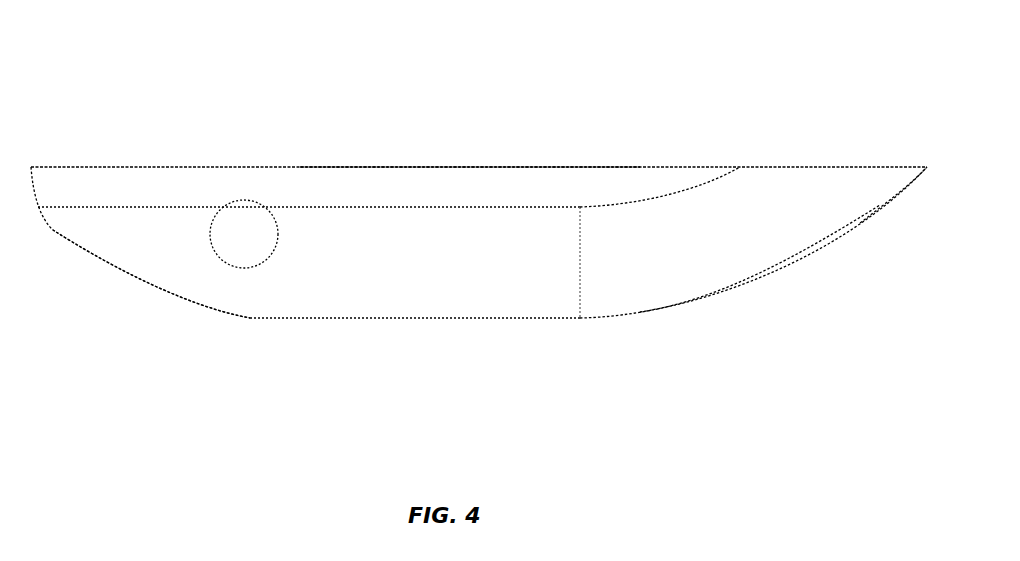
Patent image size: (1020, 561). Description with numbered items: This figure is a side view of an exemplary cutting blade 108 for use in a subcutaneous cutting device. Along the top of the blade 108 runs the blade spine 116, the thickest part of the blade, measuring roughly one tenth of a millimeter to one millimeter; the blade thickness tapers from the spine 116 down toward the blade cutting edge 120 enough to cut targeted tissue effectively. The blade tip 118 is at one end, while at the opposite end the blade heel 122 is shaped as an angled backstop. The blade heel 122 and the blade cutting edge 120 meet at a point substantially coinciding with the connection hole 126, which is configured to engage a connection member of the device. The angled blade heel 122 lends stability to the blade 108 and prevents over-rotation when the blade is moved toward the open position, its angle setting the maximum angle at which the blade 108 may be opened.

The cutting blade 108 is at (125, 167).
The blade spine 116 is at (468, 180).
The blade tip 118 is at (885, 180).
The blade cutting edge 120 is at (767, 278).
The blade heel 122 is at (126, 270).
The connection hole 126 is at (253, 245).